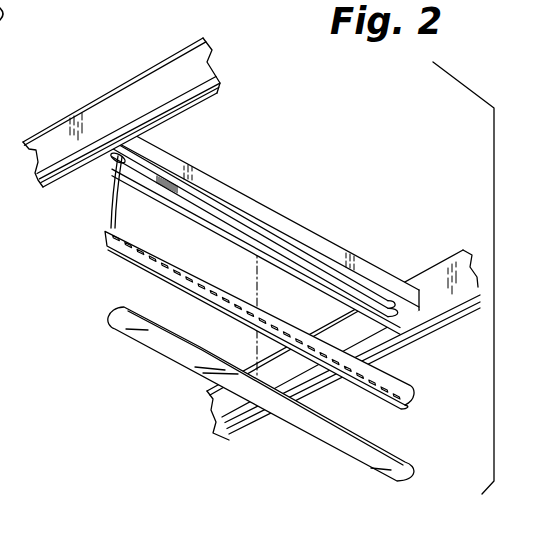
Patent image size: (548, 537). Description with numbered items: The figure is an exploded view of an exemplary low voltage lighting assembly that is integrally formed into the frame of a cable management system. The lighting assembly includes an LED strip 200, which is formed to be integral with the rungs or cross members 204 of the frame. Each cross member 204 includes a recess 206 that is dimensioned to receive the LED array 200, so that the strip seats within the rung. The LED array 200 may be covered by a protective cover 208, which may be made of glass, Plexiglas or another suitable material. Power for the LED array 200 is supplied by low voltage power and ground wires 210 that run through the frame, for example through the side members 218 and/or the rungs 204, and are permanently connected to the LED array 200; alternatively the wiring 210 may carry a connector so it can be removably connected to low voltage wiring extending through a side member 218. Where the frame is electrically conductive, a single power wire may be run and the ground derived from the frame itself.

The LED strip 200 is at (130, 261).
The cross member 204 is at (294, 232).
The recess 206 is at (212, 208).
The protective cover 208 is at (155, 348).
The low voltage power and ground wires 210 is at (111, 208).
The side member 218 is at (136, 93).